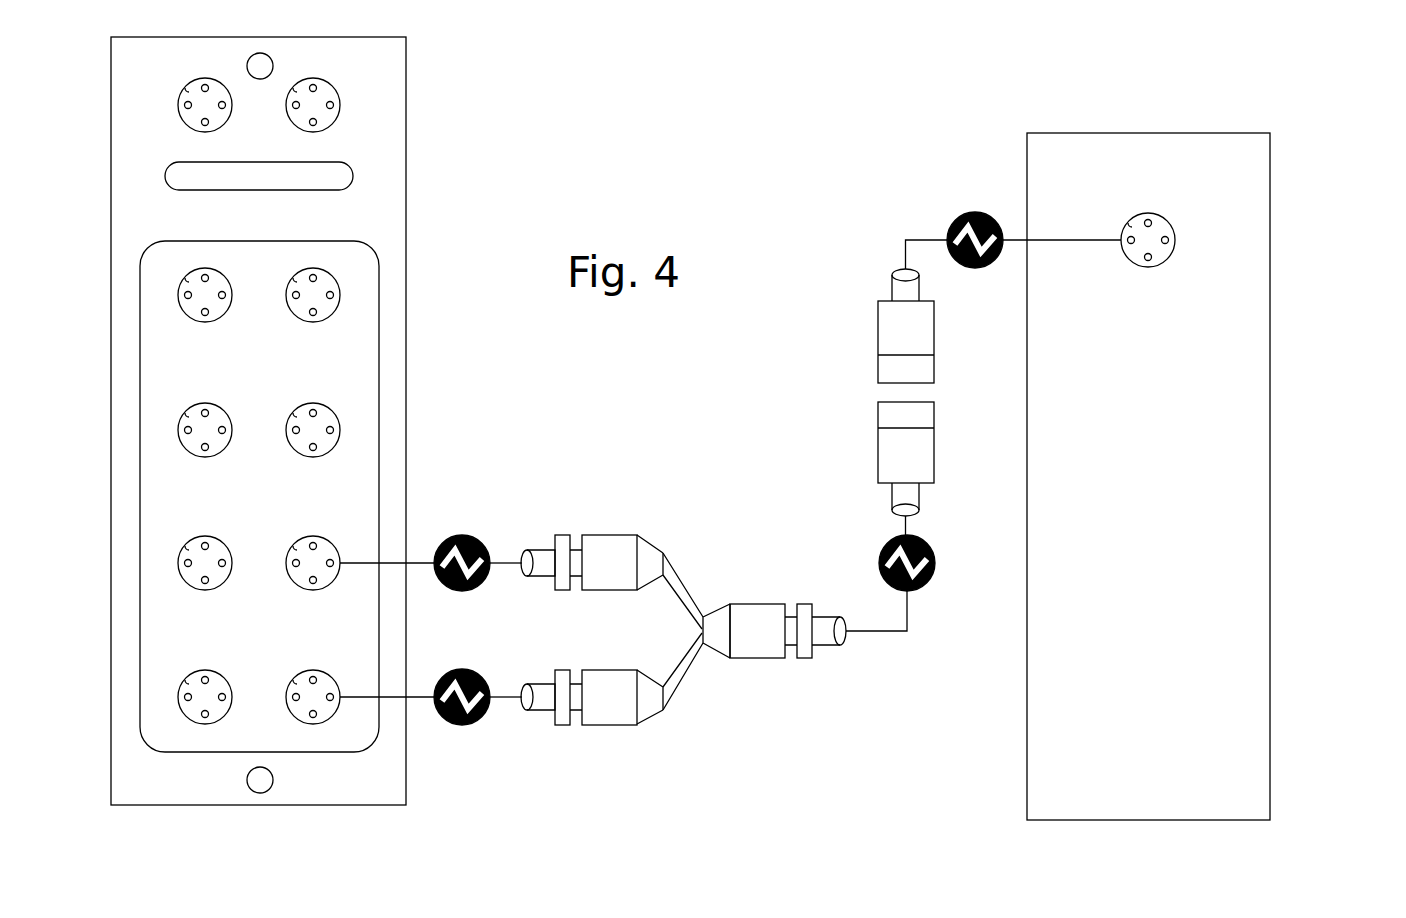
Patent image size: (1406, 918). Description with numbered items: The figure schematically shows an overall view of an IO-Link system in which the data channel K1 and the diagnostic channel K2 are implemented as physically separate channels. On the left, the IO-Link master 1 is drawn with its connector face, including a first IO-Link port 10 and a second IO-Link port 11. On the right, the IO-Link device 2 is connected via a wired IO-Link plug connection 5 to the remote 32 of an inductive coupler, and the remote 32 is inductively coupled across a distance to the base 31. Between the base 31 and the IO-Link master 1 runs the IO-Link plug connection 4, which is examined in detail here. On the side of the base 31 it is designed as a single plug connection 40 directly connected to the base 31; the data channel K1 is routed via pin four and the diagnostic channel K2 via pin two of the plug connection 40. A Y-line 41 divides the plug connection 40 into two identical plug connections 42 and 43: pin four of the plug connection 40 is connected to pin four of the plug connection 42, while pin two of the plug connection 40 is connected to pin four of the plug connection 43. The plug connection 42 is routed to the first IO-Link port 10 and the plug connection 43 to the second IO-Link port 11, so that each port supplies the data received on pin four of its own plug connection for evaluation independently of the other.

The IO-Link master 1 is at (406, 118).
The IO-Link device 2 is at (1270, 236).
The IO-Link plug connection 4 is at (714, 668).
The IO-Link plug connection 5 is at (945, 210).
The first IO-Link port 10 is at (330, 718).
The second IO-Link port 11 is at (327, 540).
The base 31 is at (878, 440).
The remote 32 is at (878, 305).
The plug connection 40 is at (925, 600).
The Y-line 41 is at (690, 580).
The plug connection 42 is at (470, 733).
The plug connection 43 is at (483, 535).